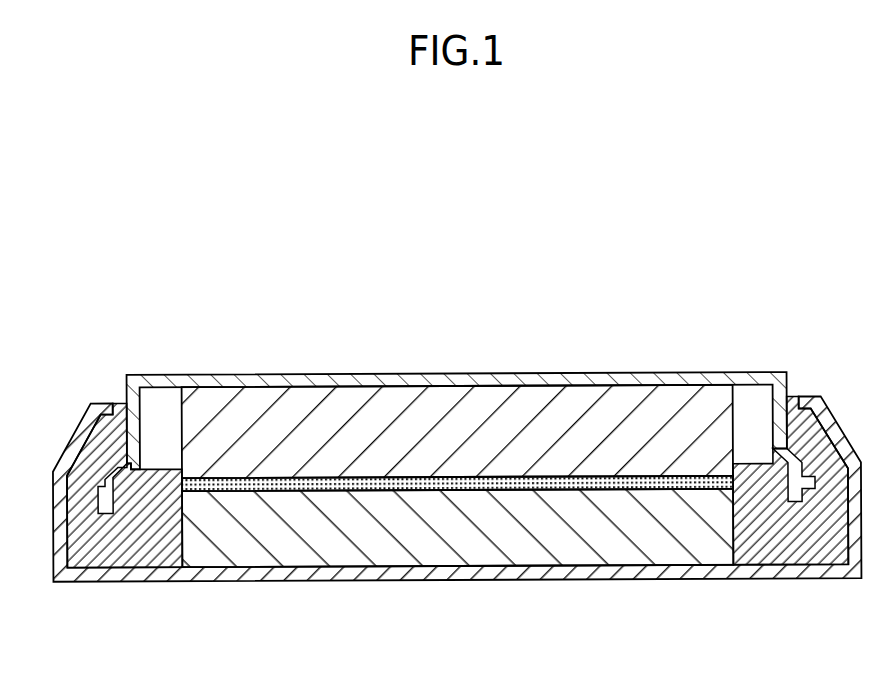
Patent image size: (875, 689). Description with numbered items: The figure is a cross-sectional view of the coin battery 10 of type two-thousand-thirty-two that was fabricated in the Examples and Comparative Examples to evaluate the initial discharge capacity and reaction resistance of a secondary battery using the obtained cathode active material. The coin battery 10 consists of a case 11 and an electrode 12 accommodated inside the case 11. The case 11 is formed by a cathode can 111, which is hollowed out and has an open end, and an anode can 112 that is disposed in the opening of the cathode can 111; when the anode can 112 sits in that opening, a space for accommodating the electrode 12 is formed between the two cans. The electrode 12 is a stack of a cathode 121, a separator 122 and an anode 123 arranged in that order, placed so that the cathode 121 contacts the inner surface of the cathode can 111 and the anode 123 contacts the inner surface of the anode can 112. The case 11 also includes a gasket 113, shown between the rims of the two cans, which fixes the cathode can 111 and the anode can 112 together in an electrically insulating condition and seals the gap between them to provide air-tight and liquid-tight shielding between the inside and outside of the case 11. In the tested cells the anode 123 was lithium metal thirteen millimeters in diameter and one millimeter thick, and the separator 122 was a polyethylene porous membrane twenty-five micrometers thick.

The coin battery 10 is at (843, 260).
The case 11 is at (203, 313).
The cathode can 111 is at (70, 436).
The anode can 112 is at (196, 386).
The gasket 113 is at (111, 418).
The electrode 12 is at (618, 643).
The cathode 121 is at (316, 548).
The separator 122 is at (453, 489).
The anode 123 is at (594, 466).